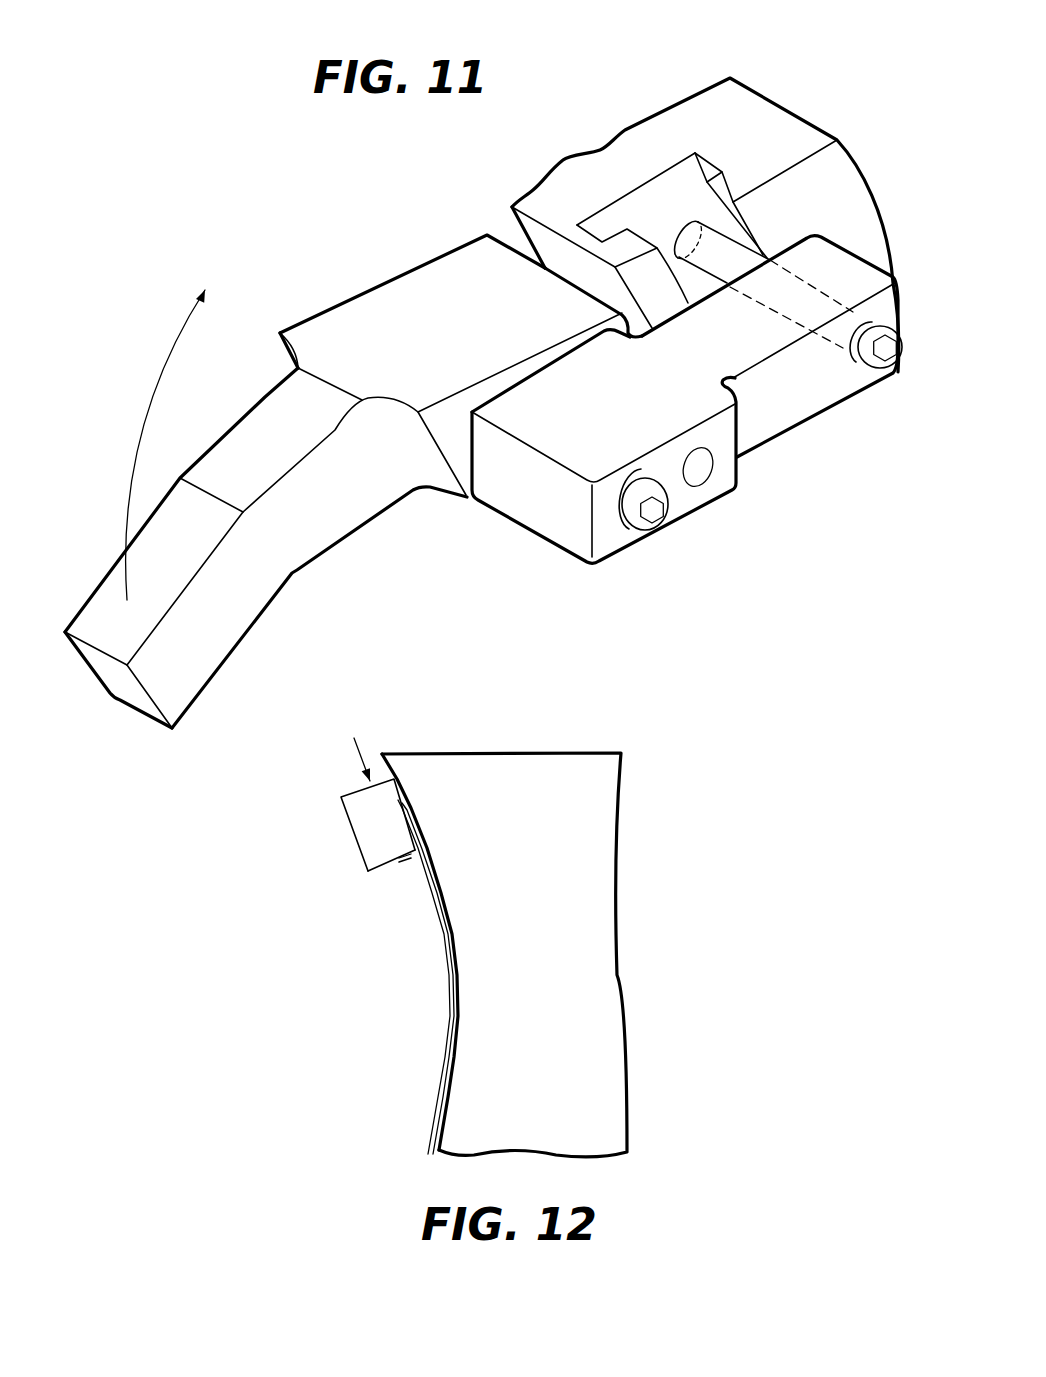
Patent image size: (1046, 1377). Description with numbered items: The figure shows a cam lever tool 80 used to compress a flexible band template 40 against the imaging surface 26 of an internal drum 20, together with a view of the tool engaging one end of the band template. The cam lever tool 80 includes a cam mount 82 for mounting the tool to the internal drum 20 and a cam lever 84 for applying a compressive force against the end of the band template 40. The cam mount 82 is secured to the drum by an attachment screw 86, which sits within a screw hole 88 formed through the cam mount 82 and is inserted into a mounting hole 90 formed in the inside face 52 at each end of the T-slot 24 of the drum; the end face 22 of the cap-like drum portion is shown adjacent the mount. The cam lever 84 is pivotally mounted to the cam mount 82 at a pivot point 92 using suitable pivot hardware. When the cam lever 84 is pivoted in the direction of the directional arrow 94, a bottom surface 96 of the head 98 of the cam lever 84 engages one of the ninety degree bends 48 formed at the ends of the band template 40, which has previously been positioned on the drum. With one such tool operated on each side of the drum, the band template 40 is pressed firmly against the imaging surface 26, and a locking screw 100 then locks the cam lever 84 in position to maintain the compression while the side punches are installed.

In FIG. 11, the internal drum 20 is at (767, 140).
In FIG. 12, the internal drum 20 is at (588, 1038).
In FIG. 11, the cap end face 22 is at (540, 235).
In FIG. 11, the T-slot 24 is at (682, 192).
In FIG. 12, the imaging surface 26 is at (454, 1085).
In FIG. 12, the band template 40 is at (423, 1034).
In FIG. 12, the ninety degree bend 48 is at (407, 865).
In FIG. 11, the inside face 52 is at (628, 215).
In FIG. 11, the cam lever tool 80 is at (288, 205).
In FIG. 11, the cam mount 82 is at (537, 508).
In FIG. 11, the cam lever 84 is at (277, 432).
In FIG. 11, the attachment screw 86 is at (883, 352).
In FIG. 11, the screw hole 88 is at (853, 368).
In FIG. 11, the mounting hole 90 is at (678, 238).
In FIG. 11, the pivot point 92 is at (700, 467).
In FIG. 11, the directional arrow 94 is at (145, 446).
In FIG. 12, the bottom surface 96 is at (384, 871).
In FIG. 11, the head 98 is at (387, 313).
In FIG. 12, the head 98 is at (366, 828).
In FIG. 11, the locking screw 100 is at (652, 518).